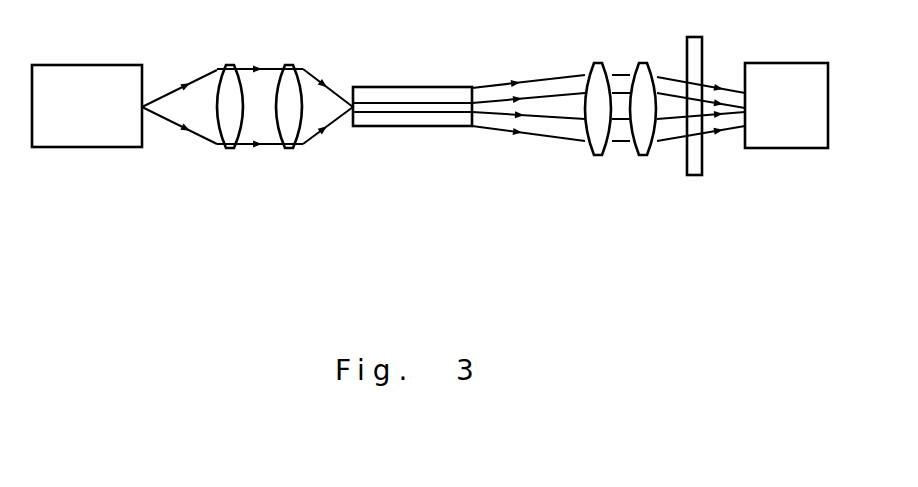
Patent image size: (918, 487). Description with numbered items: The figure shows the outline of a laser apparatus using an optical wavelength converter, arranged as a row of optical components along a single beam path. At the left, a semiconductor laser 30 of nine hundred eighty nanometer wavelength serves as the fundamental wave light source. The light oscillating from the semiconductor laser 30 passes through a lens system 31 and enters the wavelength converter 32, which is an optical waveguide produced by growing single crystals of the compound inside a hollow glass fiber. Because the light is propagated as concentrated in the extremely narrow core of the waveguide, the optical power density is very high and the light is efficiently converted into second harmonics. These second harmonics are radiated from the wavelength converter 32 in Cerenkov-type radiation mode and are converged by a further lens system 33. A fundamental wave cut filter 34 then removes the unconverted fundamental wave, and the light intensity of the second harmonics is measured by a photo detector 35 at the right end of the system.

The semiconductor laser 30 is at (92, 147).
The lens system 31 is at (305, 183).
The wavelength converter of optical waveguide type 32 is at (470, 183).
The lens system 33 is at (655, 183).
The fundamental wave cut filter 34 is at (693, 175).
The photo detector 35 is at (780, 148).